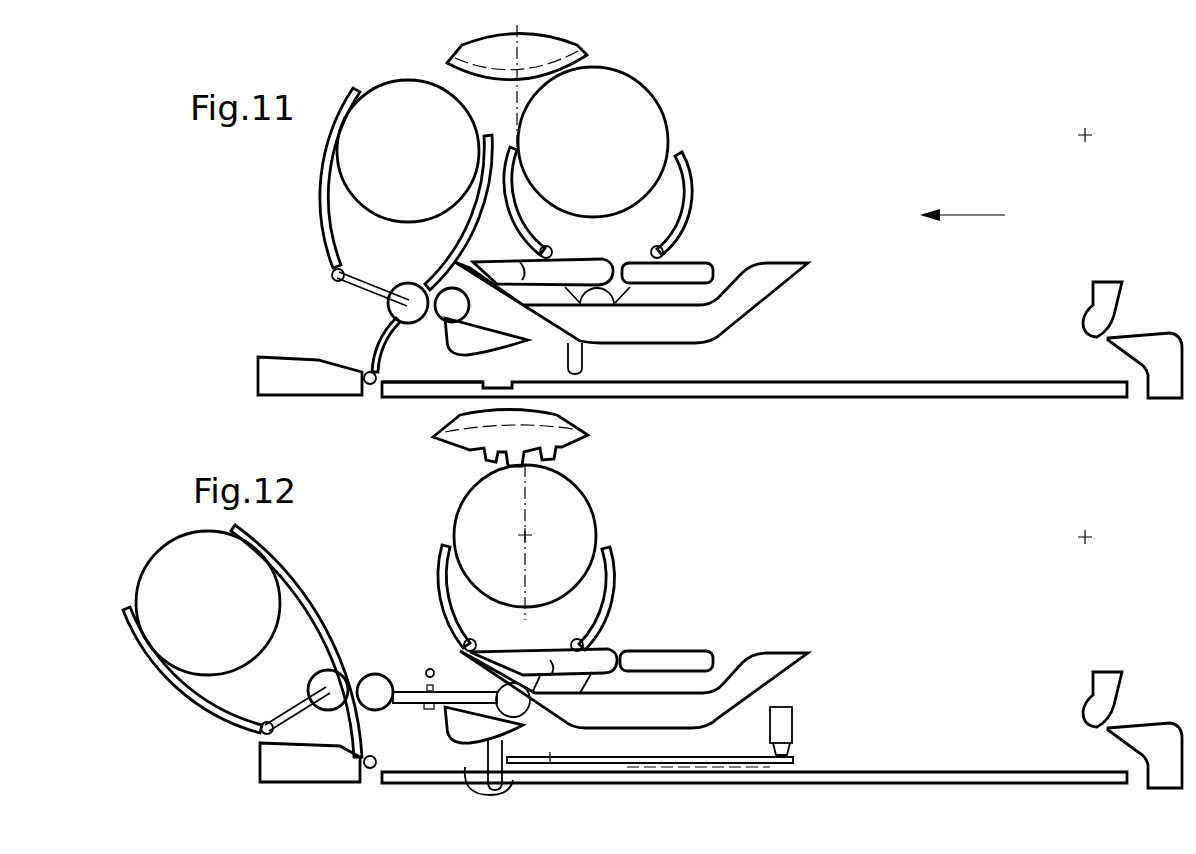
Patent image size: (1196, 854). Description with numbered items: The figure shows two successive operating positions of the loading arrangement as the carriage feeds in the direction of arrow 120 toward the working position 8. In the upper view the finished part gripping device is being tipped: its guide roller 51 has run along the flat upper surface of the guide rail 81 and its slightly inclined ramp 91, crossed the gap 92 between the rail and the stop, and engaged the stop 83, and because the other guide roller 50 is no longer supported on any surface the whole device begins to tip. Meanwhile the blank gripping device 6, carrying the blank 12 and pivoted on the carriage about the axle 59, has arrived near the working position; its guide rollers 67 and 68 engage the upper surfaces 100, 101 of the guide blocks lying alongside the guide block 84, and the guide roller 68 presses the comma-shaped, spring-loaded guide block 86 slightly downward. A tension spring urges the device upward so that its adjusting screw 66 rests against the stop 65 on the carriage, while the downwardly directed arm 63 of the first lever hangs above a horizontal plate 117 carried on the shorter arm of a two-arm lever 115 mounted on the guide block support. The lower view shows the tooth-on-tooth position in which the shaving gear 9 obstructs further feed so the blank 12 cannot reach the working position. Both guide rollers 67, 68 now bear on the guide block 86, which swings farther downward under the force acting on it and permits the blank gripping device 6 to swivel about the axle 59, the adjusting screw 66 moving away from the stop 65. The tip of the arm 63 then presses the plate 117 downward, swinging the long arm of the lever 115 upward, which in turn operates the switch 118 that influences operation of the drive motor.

In FIG. 11, the blank gripping device 6 is at (702, 148).
In FIG. 11, the working position 8 is at (512, 98).
In FIG. 12, the shaving gear 9 is at (583, 448).
In FIG. 12, the blank 12 is at (583, 518).
In FIG. 11, the guide roller 50 is at (332, 276).
In FIG. 11, the guide roller 51 is at (372, 386).
In FIG. 12, the axle 59 is at (374, 688).
In FIG. 12, the arm 63 is at (502, 757).
In FIG. 12, the stop 65 is at (427, 668).
In FIG. 12, the adjusting screw 66 is at (428, 710).
In FIG. 11, the guide roller 67 is at (663, 250).
In FIG. 12, the guide roller 67 is at (573, 641).
In FIG. 11, the guide roller 68 is at (551, 249).
In FIG. 12, the guide roller 68 is at (474, 641).
In FIG. 11, the guide rail 81 is at (828, 382).
In FIG. 11, the stop 83 is at (366, 386).
In FIG. 12, the guide block 84 is at (672, 713).
In FIG. 11, the guide block 86 is at (522, 268).
In FIG. 12, the guide block 86 is at (556, 665).
In FIG. 11, the ramp 91 is at (420, 380).
In FIG. 12, the gap 92 is at (458, 655).
In FIG. 11, the upper surface 100 is at (703, 262).
In FIG. 11, the upper surface 101 is at (582, 261).
In FIG. 12, the two-arm lever 115 is at (680, 760).
In FIG. 12, the plate 117 is at (472, 787).
In FIG. 12, the switch 118 is at (784, 728).
In FIG. 11, the arrow 120 is at (962, 202).